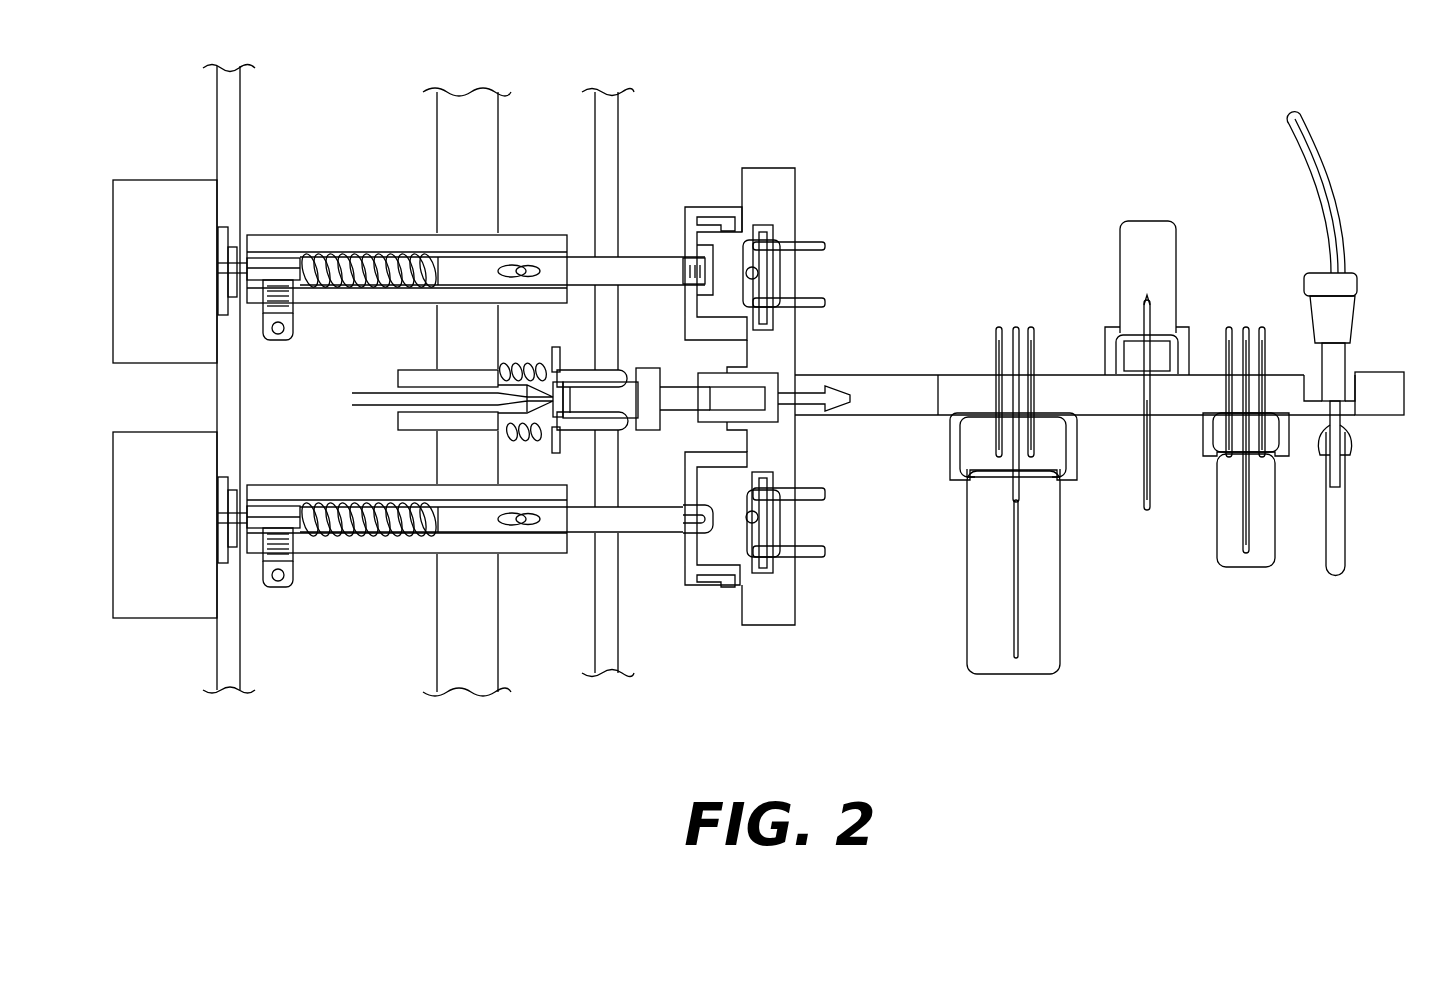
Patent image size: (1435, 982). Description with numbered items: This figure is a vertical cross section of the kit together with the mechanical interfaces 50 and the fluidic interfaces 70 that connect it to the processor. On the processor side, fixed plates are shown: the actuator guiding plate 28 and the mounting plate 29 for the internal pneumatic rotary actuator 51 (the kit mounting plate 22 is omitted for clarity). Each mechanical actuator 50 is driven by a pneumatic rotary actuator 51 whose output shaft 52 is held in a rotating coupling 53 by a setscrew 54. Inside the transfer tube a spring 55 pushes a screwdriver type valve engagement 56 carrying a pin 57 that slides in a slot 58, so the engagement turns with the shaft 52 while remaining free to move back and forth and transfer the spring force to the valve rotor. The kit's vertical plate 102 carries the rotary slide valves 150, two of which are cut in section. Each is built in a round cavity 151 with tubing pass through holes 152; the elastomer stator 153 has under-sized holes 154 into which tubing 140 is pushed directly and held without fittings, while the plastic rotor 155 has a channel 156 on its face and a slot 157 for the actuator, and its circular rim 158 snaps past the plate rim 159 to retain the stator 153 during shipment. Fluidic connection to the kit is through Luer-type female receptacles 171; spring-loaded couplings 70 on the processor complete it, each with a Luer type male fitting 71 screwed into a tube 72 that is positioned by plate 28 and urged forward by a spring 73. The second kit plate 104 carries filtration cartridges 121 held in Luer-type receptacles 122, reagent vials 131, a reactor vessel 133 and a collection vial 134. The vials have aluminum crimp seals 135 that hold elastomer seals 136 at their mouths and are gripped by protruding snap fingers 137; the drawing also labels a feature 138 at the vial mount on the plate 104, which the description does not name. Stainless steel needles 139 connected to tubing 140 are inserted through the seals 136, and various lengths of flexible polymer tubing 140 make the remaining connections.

The kit mounting plate 22 is at (612, 148).
The actuator guiding plate 28 is at (450, 148).
The mounting plate 29 is at (232, 118).
The mechanical interface 50 is at (319, 166).
The pneumatic rotary actuator 51 is at (165, 399).
The output shaft 52 is at (262, 240).
The rotating coupling 53 is at (314, 238).
The setscrew 54 is at (280, 334).
The spring 55 is at (375, 252).
The screwdriver type valve engagement 56 is at (656, 263).
The pin 57 is at (535, 266).
The slot 58 is at (497, 270).
The spring-loaded coupling 70 is at (329, 395).
The Luer type male fitting 71 is at (611, 399).
The tube 72 is at (418, 378).
The spring 73 is at (529, 363).
The vertical plate 102 is at (758, 178).
The plate 104 is at (1391, 405).
The filtration cartridge 121 is at (1337, 417).
The Luer-type receptacle 122 is at (1316, 374).
The reagent vial 131 is at (1148, 277).
The reactor vessel 133 is at (1013, 572).
The collection vial 134 is at (1246, 490).
The aluminum crimp seal 135 is at (991, 474).
The elastomer seal 136 is at (988, 422).
The snap finger 137 is at (958, 480).
The channel 138 is at (1049, 373).
The stainless steel needle 139 is at (1140, 310).
The tubing 140 is at (1011, 330).
The rotary slide valve 150 is at (822, 218).
The round cavity 151 is at (814, 348).
The tubing pass through hole 152 is at (783, 240).
The stator 153 is at (764, 288).
The under-sized hole 154 is at (762, 298).
The rotor 155 is at (716, 217).
The channel 156 is at (780, 270).
The slot 157 is at (696, 292).
The circular rim 158 is at (760, 474).
The rim 159 is at (698, 577).
The Luer-type female receptacle 171 is at (710, 378).